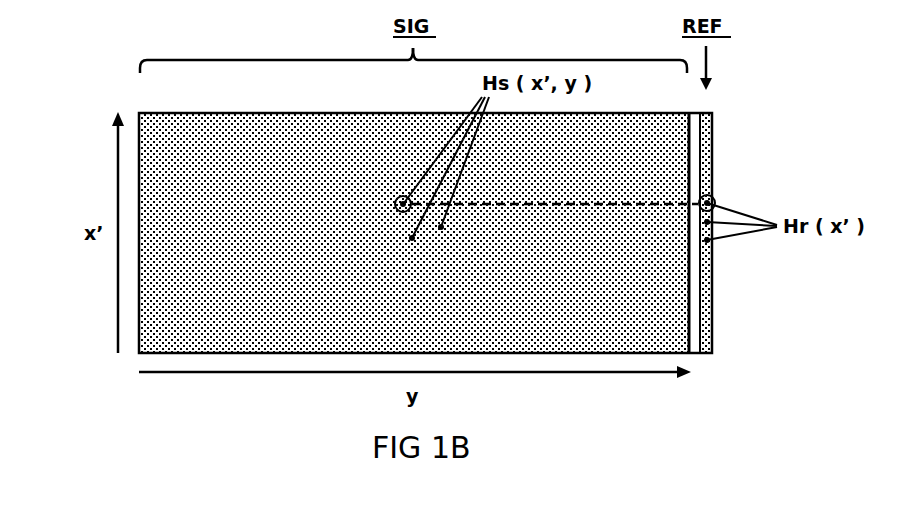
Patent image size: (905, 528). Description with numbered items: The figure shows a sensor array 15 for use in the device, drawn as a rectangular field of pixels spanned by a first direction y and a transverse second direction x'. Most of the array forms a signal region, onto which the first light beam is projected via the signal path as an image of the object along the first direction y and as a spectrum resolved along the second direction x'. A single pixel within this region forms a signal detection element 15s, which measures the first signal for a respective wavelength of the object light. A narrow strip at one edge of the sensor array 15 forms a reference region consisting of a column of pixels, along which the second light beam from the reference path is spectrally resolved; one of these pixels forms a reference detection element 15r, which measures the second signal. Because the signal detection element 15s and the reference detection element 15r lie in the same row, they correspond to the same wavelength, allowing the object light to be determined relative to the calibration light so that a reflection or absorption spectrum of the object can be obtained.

The sensor array 15 is at (95, 90).
The signal detection element 15s is at (402, 183).
The reference detection element 15r is at (723, 193).